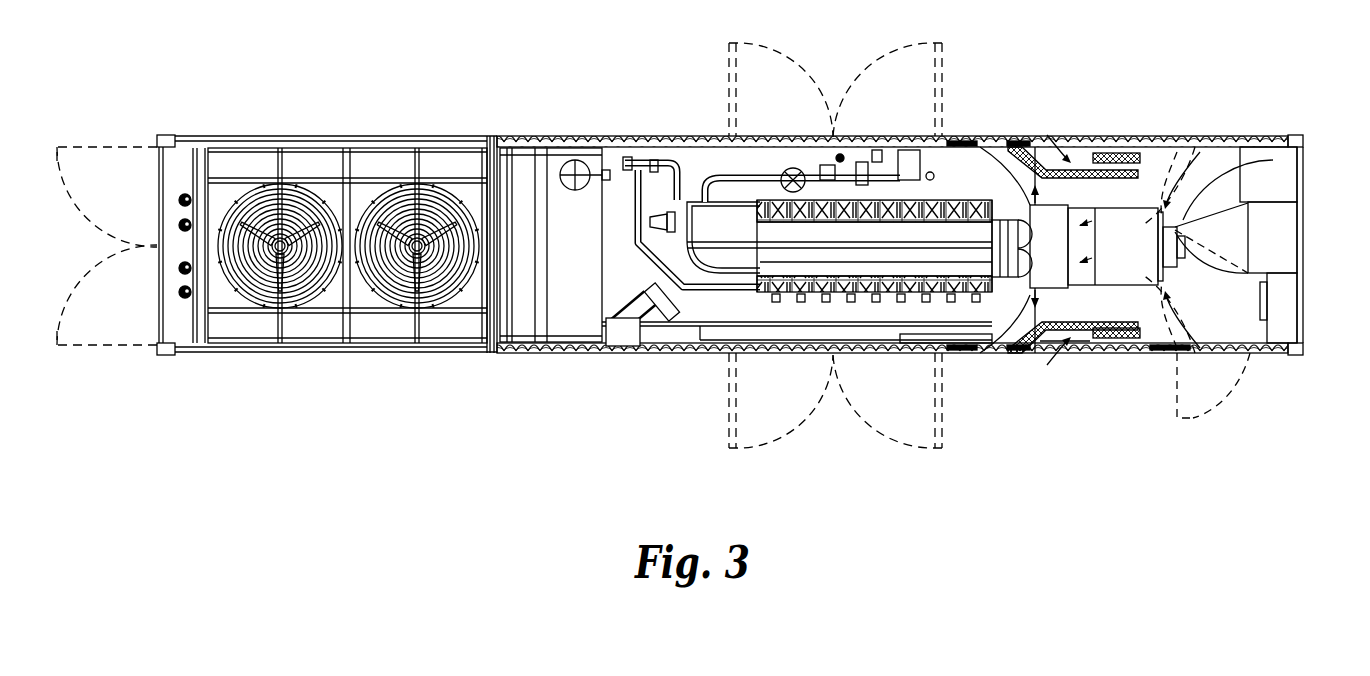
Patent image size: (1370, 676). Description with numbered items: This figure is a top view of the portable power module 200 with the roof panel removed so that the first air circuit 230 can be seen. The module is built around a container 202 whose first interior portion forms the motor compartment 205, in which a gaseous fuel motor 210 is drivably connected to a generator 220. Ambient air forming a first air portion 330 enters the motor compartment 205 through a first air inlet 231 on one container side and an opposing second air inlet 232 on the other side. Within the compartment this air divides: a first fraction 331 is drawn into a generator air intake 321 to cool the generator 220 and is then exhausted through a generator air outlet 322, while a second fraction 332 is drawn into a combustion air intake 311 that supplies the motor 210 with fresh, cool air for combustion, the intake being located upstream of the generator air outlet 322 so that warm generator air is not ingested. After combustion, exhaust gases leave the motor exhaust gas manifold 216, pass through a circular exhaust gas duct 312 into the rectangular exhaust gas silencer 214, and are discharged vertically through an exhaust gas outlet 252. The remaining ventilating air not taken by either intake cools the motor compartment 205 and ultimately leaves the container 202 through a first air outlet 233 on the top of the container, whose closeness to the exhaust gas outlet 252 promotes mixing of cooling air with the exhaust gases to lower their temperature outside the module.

The portable power module 200 is at (452, 440).
The container 202 is at (228, 347).
The motor compartment 205 is at (1232, 313).
The gaseous fuel motor 210 is at (745, 137).
The exhaust gas silencer 214 is at (572, 317).
The motor exhaust gas manifold 216 is at (768, 127).
The generator 220 is at (1148, 259).
The first air circuit 230 is at (1015, 408).
The first air inlet 231 is at (1073, 353).
The second air inlet 232 is at (1035, 138).
The first air outlet 233 is at (517, 190).
The exhaust gas outlet 252 is at (565, 160).
The combustion air intake 311 is at (1030, 246).
The exhaust gas duct 312 is at (645, 353).
The generator air intake 321 is at (1275, 160).
The generator air outlet 322 is at (993, 147).
The first air portion 330 is at (1053, 108).
The first fraction 331 is at (1172, 175).
The second fraction 332 is at (1125, 155).